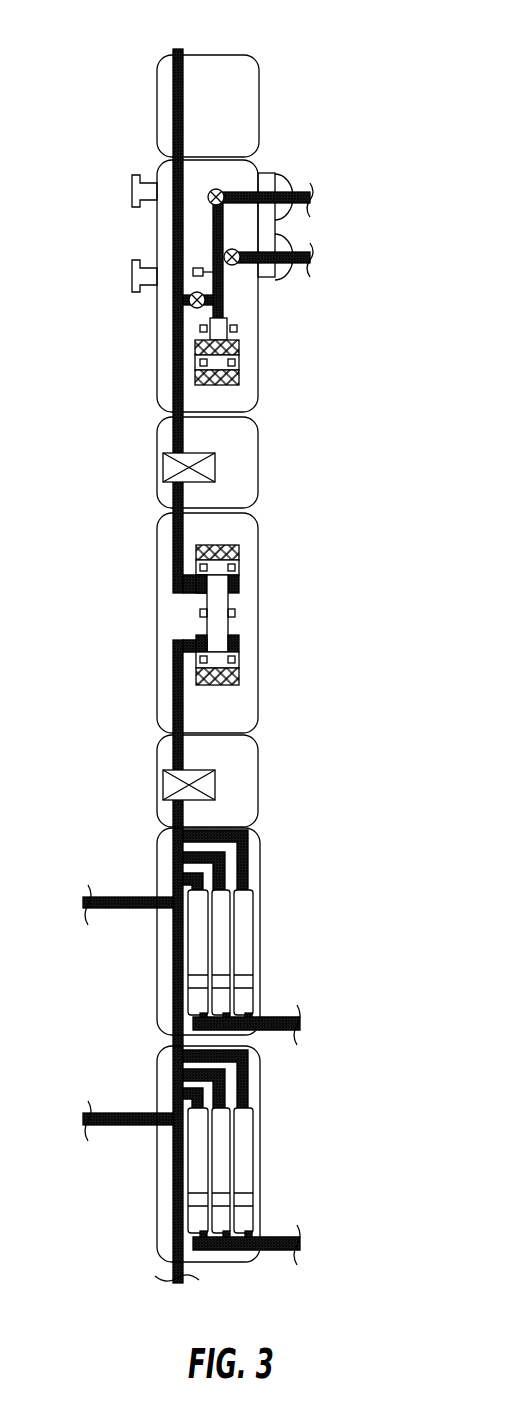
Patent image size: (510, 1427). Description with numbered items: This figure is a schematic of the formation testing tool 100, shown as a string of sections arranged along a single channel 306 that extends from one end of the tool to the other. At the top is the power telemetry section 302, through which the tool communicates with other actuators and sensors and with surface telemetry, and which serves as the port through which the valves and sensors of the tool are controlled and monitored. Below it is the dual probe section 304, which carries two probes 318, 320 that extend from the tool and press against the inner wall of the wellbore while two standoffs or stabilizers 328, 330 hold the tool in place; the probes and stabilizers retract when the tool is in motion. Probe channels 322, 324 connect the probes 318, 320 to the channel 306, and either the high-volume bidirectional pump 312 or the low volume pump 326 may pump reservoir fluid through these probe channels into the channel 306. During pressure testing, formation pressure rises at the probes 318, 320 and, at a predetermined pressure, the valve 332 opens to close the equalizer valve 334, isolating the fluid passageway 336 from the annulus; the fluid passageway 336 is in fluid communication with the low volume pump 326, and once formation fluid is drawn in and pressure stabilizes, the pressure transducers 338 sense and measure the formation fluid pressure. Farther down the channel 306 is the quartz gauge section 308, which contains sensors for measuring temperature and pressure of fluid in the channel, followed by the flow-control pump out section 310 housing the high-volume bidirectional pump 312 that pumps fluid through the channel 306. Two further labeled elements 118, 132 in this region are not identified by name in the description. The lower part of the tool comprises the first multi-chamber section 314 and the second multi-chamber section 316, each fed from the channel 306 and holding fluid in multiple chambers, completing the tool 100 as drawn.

The formation testing tool 100 is at (348, 51).
The power telemetry section 302 is at (157, 108).
The dual probe section 304 is at (157, 348).
The channel 306 is at (172, 414).
The quartz gauge section 308 is at (163, 464).
The flow-control pump out section 310 is at (157, 690).
The high-volume bidirectional pump 312 is at (200, 612).
The valve module 118 is at (157, 773).
The valve 132 is at (215, 785).
The first multi-chamber section 314 is at (157, 853).
The second multi-chamber section 316 is at (157, 1072).
The probe 318 is at (291, 181).
The probe 320 is at (289, 243).
The probe channel 322 is at (252, 191).
The probe channel 324 is at (233, 264).
The low volume pump 326 is at (239, 357).
The stabilizer 328 is at (132, 190).
The stabilizer 330 is at (132, 281).
The valve 332 is at (217, 189).
The equalizer valve 334 is at (197, 308).
The fluid passageway 336 is at (213, 238).
The pressure transducer 338 is at (199, 267).